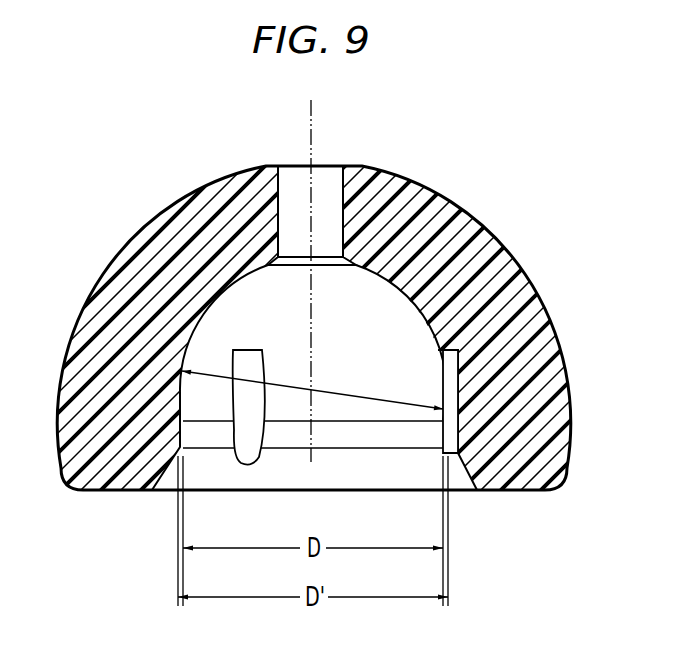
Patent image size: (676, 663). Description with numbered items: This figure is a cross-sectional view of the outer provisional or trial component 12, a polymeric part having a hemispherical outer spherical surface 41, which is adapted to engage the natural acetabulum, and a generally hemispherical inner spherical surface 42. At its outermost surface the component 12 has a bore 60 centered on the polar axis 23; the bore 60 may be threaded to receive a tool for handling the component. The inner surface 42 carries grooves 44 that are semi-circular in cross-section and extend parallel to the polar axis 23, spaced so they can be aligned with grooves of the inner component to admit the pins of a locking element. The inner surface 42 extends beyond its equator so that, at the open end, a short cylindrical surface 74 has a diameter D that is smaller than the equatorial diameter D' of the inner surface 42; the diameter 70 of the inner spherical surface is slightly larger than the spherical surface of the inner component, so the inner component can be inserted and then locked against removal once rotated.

The outer provisional component 12 is at (151, 216).
The polar axis 23 is at (309, 136).
The outer spherical surface 41 is at (463, 208).
The inner spherical surface 42 is at (407, 300).
The grooves 44 is at (245, 462).
The bore 60 is at (343, 184).
The diameter of inner spherical surface 70 is at (283, 382).
The cylindrical surface 74 is at (182, 432).